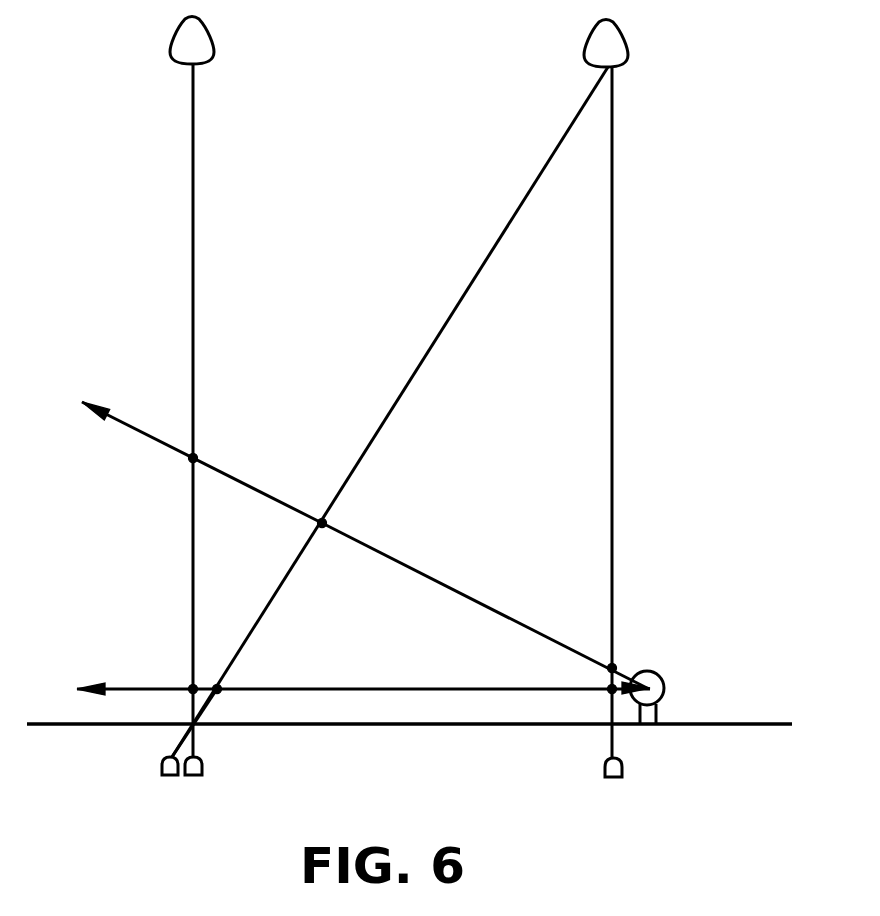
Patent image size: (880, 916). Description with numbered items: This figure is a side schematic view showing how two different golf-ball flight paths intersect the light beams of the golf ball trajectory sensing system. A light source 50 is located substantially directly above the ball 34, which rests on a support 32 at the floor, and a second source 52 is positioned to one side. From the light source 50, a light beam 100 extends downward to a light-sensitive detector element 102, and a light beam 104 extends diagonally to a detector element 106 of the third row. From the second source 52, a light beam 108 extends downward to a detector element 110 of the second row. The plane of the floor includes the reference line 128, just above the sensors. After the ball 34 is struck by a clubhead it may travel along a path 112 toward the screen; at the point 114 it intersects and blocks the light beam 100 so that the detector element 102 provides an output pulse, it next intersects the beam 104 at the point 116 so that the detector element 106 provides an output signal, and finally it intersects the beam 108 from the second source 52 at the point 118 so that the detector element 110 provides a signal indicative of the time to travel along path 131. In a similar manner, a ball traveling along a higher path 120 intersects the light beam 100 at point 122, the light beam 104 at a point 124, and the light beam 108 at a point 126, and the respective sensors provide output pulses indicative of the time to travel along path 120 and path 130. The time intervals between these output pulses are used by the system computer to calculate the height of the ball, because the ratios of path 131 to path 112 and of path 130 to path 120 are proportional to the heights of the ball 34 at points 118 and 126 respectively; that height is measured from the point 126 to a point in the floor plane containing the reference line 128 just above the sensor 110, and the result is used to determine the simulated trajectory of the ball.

The base of detector 32 is at (657, 713).
The ball 34 is at (664, 680).
The light source 50 is at (616, 55).
The second source 52 is at (200, 50).
The light beam 100 is at (612, 418).
The detector element 102 is at (608, 780).
The light beam 104 is at (492, 248).
The detector element 106 is at (172, 778).
The light beam 108 is at (193, 272).
The detector element 110 is at (202, 770).
The path 112 is at (395, 690).
The point 114 is at (607, 693).
The point 116 is at (217, 688).
The point 118 is at (193, 688).
The path 120 is at (448, 588).
The point 122 is at (612, 668).
The point 124 is at (327, 520).
The point 126 is at (187, 462).
The reference line 128 is at (437, 728).
The path 130 is at (252, 487).
The path 131 is at (205, 683).